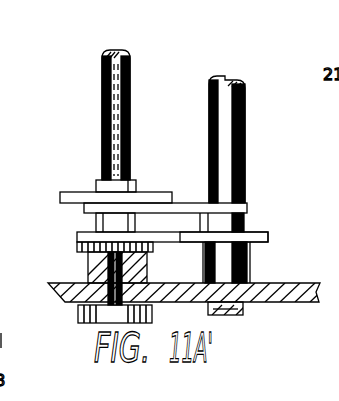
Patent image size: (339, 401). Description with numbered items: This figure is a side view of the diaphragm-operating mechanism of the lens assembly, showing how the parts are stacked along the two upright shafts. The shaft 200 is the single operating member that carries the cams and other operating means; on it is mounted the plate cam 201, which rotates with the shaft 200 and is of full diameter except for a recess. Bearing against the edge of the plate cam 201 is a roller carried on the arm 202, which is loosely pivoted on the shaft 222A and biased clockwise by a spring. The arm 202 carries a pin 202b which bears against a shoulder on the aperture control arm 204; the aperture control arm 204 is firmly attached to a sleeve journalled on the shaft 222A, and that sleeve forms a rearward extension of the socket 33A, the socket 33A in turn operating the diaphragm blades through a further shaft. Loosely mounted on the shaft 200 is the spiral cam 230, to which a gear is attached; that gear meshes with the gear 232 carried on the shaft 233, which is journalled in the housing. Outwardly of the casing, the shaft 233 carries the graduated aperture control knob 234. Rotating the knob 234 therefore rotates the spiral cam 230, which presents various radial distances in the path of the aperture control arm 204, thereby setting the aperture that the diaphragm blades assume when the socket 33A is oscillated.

The shaft 200 is at (113, 79).
The plate cam 201 is at (82, 197).
The arm 202 is at (223, 208).
The pin 202b is at (198, 222).
The aperture control arm 204 is at (265, 236).
The shaft 222A is at (226, 113).
The spiral cam 230 is at (88, 233).
The gear 232 is at (78, 246).
The shaft 233 is at (143, 269).
The graduated aperture control knob 234 is at (78, 313).
The socket 33A is at (213, 315).